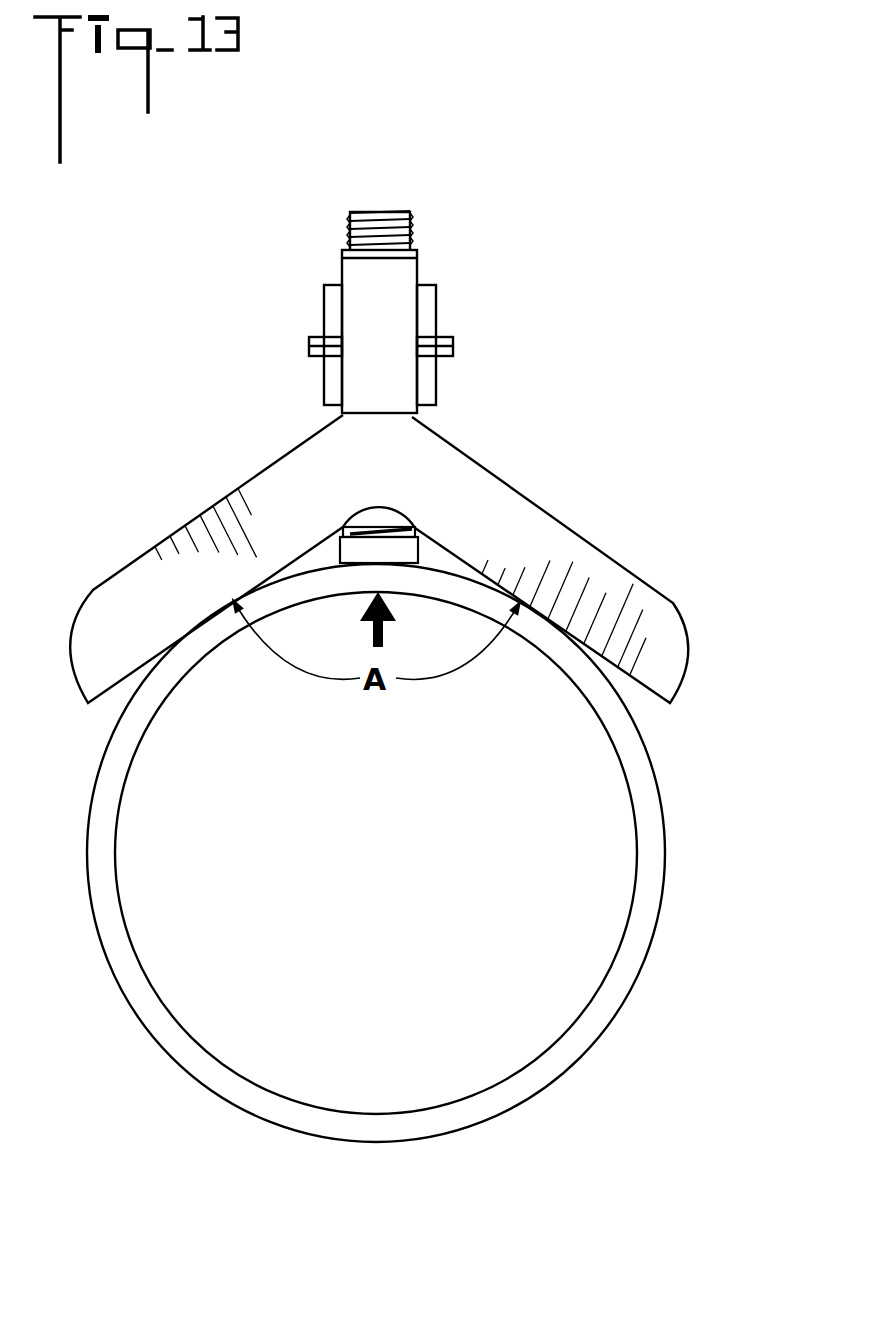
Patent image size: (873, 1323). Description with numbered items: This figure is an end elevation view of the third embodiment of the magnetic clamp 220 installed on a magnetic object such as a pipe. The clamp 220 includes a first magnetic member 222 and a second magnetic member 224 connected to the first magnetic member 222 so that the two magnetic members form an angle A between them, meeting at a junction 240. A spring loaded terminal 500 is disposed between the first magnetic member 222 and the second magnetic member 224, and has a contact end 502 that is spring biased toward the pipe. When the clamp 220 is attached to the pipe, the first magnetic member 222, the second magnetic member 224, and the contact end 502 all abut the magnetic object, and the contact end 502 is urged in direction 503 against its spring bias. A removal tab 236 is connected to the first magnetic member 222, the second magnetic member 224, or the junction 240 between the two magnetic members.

The magnetic clamp 220 is at (583, 237).
The spring loaded terminal 500 is at (339, 310).
The removal tab 236 is at (362, 360).
The junction 240 is at (379, 551).
The first magnetic member 222 is at (197, 522).
The second magnetic member 224 is at (577, 535).
The contact end 502 is at (380, 550).
The direction 503 is at (367, 632).